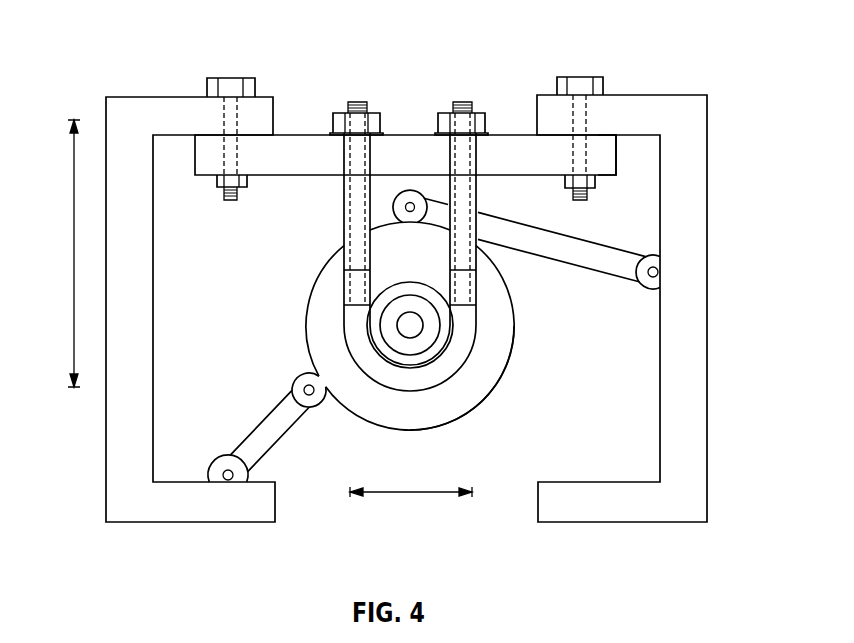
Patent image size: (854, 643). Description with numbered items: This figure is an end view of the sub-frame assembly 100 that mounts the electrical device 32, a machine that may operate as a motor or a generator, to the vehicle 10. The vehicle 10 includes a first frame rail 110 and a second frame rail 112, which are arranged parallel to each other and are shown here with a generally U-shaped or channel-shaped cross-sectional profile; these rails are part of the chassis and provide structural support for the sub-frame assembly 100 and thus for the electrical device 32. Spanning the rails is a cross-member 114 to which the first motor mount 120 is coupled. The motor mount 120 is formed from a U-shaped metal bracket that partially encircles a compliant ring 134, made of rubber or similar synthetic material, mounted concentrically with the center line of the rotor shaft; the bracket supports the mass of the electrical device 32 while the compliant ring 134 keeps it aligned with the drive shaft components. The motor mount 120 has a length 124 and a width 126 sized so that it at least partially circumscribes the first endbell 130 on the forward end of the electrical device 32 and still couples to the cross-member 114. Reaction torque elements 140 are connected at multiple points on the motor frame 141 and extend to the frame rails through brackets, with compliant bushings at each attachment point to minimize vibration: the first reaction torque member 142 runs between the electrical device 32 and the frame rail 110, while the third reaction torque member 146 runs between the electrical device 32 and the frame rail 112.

The vehicle 10 is at (122, 51).
The electrical device 32 is at (505, 312).
The sub-frame assembly 100 is at (201, 192).
The first frame rail 110 is at (113, 110).
The second frame rail 112 is at (695, 162).
The cross-member 114 is at (605, 165).
The first motor mount 120 is at (405, 134).
The length 124 is at (72, 242).
The width 126 is at (410, 494).
The first endbell 130 is at (412, 362).
The compliant ring 134 is at (393, 338).
The reaction torque elements 140 is at (520, 236).
The motor frame 141 is at (503, 377).
The first reaction torque member 142 is at (280, 437).
The third reaction torque member 146 is at (553, 263).